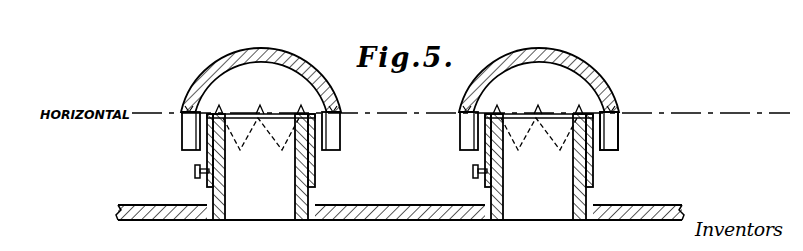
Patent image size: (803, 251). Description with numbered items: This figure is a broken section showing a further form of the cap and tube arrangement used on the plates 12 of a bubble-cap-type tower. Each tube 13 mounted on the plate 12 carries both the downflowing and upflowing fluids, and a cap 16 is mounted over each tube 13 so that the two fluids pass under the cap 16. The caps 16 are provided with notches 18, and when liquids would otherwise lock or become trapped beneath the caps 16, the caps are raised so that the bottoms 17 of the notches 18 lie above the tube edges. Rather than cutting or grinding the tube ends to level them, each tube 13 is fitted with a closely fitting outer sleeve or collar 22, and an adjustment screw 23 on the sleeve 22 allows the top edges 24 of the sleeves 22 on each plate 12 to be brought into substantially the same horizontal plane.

The plate 12 is at (393, 221).
The tube 13 is at (310, 202).
The cap 16 is at (250, 49).
The bottom of notch 17 is at (189, 104).
The notch 18 is at (594, 148).
The outer sleeve 22 is at (315, 167).
The adjustment screw 23 is at (194, 170).
The top edge of sleeve 24 is at (281, 114).